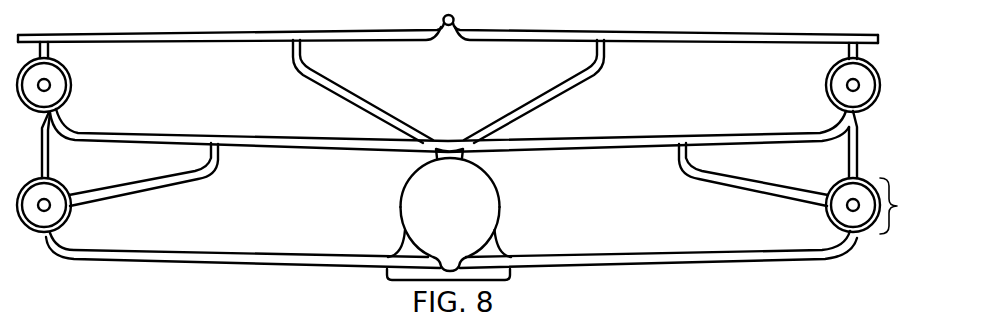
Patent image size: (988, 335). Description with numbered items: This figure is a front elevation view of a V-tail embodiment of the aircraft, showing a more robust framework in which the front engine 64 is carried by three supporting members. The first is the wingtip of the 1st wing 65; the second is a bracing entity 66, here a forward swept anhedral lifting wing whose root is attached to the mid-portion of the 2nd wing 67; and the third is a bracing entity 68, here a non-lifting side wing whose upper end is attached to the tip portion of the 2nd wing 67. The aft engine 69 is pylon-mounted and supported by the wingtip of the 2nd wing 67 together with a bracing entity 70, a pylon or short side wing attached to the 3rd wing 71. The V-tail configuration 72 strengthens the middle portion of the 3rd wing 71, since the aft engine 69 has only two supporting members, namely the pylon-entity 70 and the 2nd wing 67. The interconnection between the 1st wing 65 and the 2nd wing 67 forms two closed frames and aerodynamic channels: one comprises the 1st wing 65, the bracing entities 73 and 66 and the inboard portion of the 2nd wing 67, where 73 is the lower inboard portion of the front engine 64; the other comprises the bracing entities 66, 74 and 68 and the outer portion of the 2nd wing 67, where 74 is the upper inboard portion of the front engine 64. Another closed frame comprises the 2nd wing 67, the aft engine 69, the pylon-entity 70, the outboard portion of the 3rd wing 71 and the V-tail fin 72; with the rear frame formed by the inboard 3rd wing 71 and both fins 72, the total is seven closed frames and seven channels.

The front engine 64 is at (850, 195).
The 1st wing 65 is at (643, 257).
The bracing entity 66 is at (713, 181).
The 2nd wing 67 is at (628, 139).
The bracing entity 68 is at (858, 146).
The aft engine 69 is at (868, 85).
The bracing entity 70 is at (858, 49).
The 3rd wing 71 is at (735, 40).
The V-tail configuration 72 is at (543, 100).
The lower inboard portion of the front engine 73 is at (833, 220).
The upper inboard portion of the front engine 74 is at (835, 186).